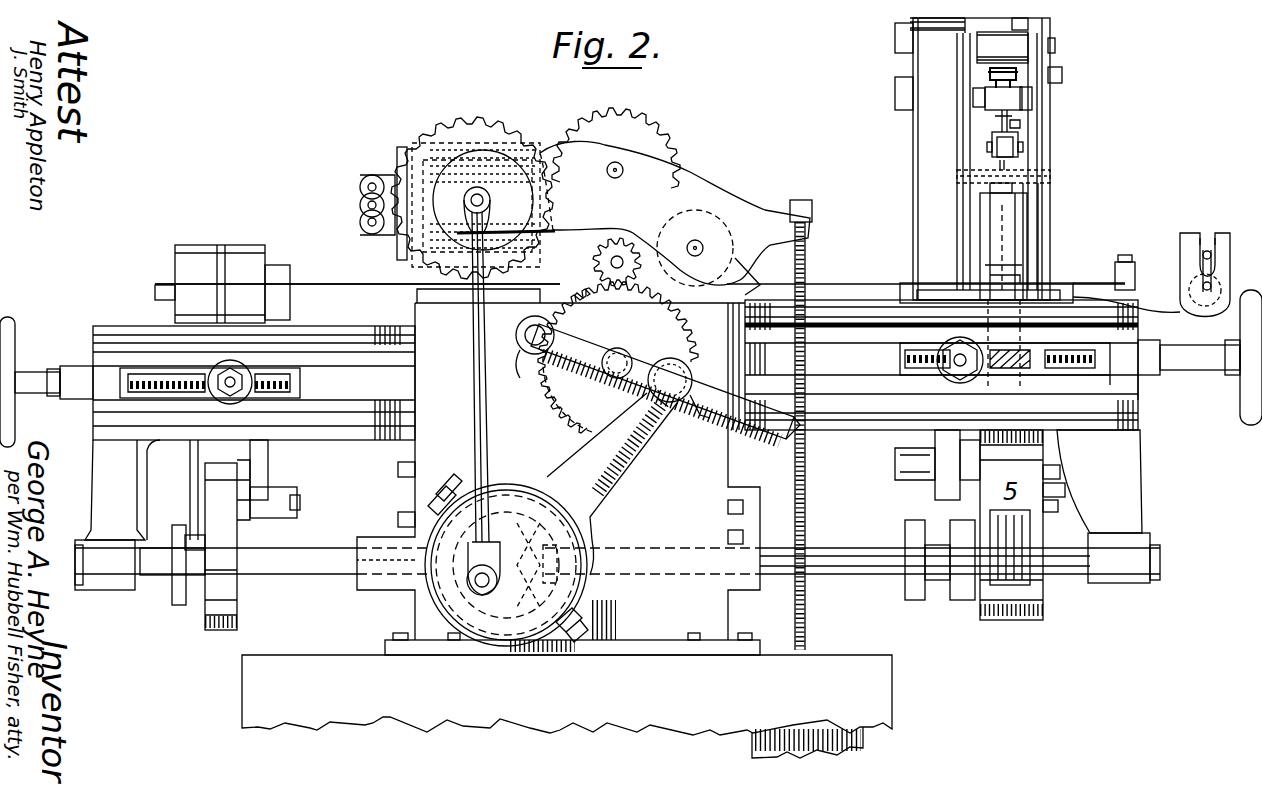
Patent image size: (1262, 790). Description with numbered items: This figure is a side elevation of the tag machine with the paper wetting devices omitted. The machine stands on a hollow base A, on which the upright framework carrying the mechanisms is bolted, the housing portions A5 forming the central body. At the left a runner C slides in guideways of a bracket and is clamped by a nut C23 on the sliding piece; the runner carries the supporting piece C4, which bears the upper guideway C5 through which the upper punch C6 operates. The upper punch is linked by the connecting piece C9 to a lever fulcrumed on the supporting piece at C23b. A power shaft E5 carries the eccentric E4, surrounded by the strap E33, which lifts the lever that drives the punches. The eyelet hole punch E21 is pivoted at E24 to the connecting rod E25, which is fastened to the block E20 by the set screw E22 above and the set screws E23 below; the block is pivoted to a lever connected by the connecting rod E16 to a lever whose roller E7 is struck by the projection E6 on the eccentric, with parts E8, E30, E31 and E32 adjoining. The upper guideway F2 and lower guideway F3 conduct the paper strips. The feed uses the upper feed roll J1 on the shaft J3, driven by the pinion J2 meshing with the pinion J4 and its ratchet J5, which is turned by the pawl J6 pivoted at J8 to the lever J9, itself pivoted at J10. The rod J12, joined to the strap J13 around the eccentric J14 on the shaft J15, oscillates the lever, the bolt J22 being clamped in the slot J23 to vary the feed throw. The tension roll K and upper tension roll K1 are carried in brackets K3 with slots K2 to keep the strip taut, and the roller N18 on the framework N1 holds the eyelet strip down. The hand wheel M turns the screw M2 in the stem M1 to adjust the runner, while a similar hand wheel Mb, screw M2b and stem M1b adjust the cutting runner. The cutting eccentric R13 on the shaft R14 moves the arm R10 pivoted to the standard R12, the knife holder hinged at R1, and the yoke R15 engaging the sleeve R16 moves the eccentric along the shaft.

The base A is at (567, 706).
The housing A5 is at (640, 462).
The runner C is at (333, 284).
The supporting piece C4 is at (987, 161).
The guideway C5 is at (1005, 230).
The upper punch C6 is at (990, 190).
The connecting piece C9 is at (962, 88).
The nut C23 is at (222, 385).
The nut C23b is at (953, 370).
The eccentric E4 is at (1043, 518).
The power shaft E5 is at (855, 560).
The projection E6 is at (1055, 465).
The roller E7 is at (1064, 478).
The nut E8 is at (1060, 492).
The connecting rod E16 is at (1040, 195).
The block E20 is at (1005, 98).
The punch E21 is at (1010, 162).
The set screw E22 is at (1015, 78).
The set screws E23 is at (1013, 115).
The pivot E24 is at (1017, 147).
The connecting rod E25 is at (1020, 125).
The bracket E30 is at (942, 518).
The disk E31 is at (925, 572).
The disk E32 is at (965, 575).
The strap E33 is at (1030, 583).
The upper guideway F2 is at (1010, 262).
The lower guideway F3 is at (1045, 272).
The feed roll J1 is at (517, 338).
The pinion J2 is at (600, 252).
The shaft J3 is at (598, 252).
The pinion J4 is at (560, 398).
The ratchet J5 is at (618, 357).
The pawl J6 is at (522, 360).
The pivot J8 is at (662, 382).
The lever J9 is at (606, 354).
The pivot J10 is at (668, 358).
The rod J12 is at (612, 466).
The strap J13 is at (582, 540).
The eccentric J14 is at (518, 508).
The shaft J15 is at (468, 575).
The bolt J22 is at (698, 416).
The slot J23 is at (788, 432).
The tension roll K is at (1228, 282).
The tension roll K1 is at (1228, 255).
The slot K2 is at (1207, 232).
The bracket K3 is at (1195, 248).
The hand wheel M is at (14, 420).
The hand wheel Mb is at (1245, 385).
The stem M1 is at (42, 378).
The stem M1b is at (1196, 362).
The screw M2 is at (150, 385).
The adjusting screw M2b is at (1090, 372).
The supporting framework N1 is at (1070, 366).
The roller N18 is at (1010, 366).
The hinge R1 is at (203, 262).
The arm R10 is at (238, 527).
The standard R12 is at (262, 467).
The eccentric R13 is at (228, 590).
The shaft R14 is at (320, 558).
The yoke R15 is at (190, 486).
The sleeve R16 is at (175, 592).